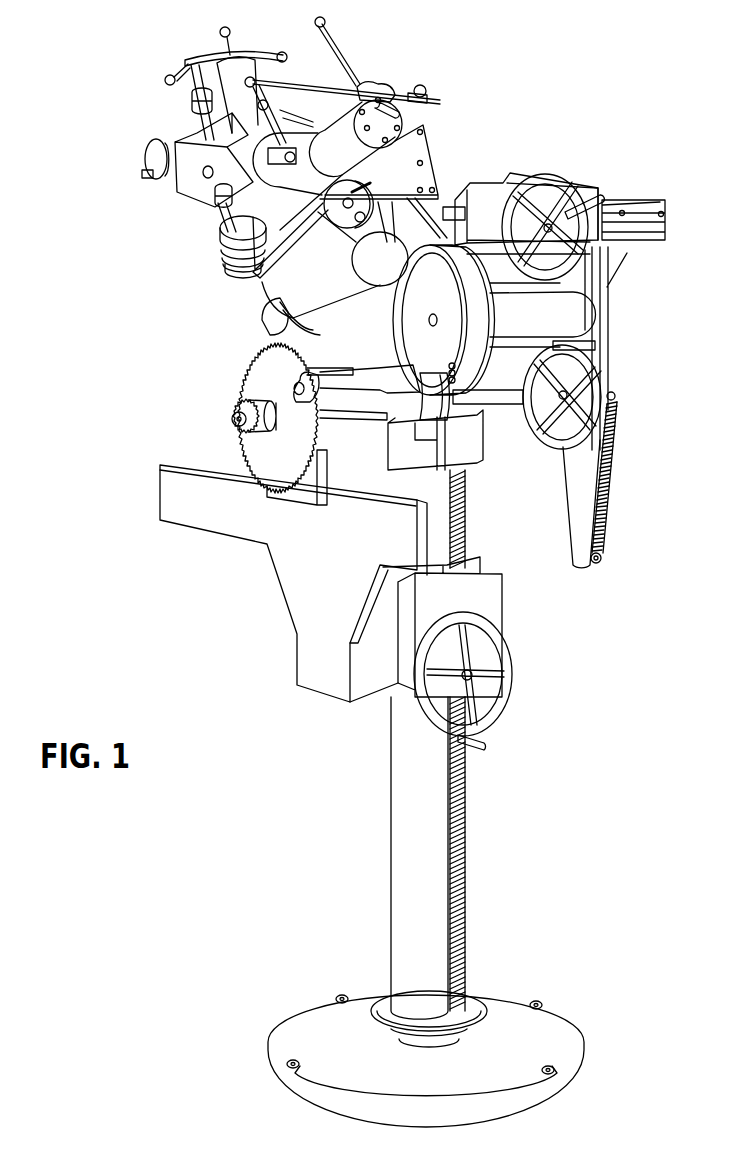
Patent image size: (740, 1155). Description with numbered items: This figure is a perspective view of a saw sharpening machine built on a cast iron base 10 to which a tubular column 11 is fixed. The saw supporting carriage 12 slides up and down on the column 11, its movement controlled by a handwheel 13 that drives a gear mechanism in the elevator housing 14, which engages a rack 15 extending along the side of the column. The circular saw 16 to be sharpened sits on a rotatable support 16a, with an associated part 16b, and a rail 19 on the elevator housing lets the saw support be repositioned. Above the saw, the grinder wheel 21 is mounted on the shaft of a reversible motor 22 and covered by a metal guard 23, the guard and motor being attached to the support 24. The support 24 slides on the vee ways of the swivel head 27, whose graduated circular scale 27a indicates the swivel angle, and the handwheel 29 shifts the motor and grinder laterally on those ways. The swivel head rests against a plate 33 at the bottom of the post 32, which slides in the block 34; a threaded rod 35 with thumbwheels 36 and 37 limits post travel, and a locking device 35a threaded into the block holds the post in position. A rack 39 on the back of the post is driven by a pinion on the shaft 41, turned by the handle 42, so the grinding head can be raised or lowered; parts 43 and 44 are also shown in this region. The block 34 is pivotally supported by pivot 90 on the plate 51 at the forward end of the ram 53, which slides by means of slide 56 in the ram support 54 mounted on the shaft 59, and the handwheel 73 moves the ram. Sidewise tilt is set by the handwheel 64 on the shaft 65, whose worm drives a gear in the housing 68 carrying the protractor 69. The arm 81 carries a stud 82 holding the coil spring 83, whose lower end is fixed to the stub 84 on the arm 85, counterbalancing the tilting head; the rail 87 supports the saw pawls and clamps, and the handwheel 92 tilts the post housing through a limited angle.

The base 10 is at (567, 1042).
The tubular column 11 is at (402, 842).
The saw supporting carriage 12 is at (270, 608).
The handwheel 13 is at (510, 672).
The housing 14 is at (495, 611).
The rack 15 is at (470, 805).
The circular saw 16 is at (252, 385).
The rotatable support 16a is at (253, 453).
The gear 16b is at (237, 418).
The rail 19 is at (217, 512).
The grinder wheel 21 is at (298, 335).
The reversible motor 22 is at (345, 298).
The metal guard 23 is at (268, 322).
The support 24 is at (275, 272).
The swivel head 27 is at (218, 277).
The graduated circular scale 27a is at (220, 258).
The handwheel 29 is at (357, 180).
The post 32 is at (238, 65).
The plate 33 is at (217, 238).
The block 34 is at (287, 112).
The threaded rod 35 is at (190, 87).
The locking device 35a is at (185, 178).
The thumbwheel 36 is at (196, 105).
The thumbwheel 37 is at (205, 57).
The rack 39 is at (262, 88).
The shaft 41 is at (421, 88).
The handle 42 is at (372, 88).
The cylinder flange 43 is at (352, 157).
The lever 44 is at (348, 62).
The plate 51 is at (425, 173).
The ram 53 is at (447, 190).
The ram support 54 is at (583, 188).
The slide 56 is at (643, 210).
The shaft 59 is at (575, 322).
The handwheel 64 is at (555, 445).
The shaft 65 is at (508, 394).
The housing 68 is at (485, 327).
The protractor 69 is at (413, 333).
The handwheel 73 is at (552, 185).
The arm 81 is at (612, 368).
The stud 82 is at (612, 395).
The coil spring 83 is at (610, 510).
The stub 84 is at (590, 567).
The arm 85 is at (573, 518).
The rail 87 is at (390, 450).
The pivot 90 is at (340, 196).
The handwheel 92 is at (146, 163).